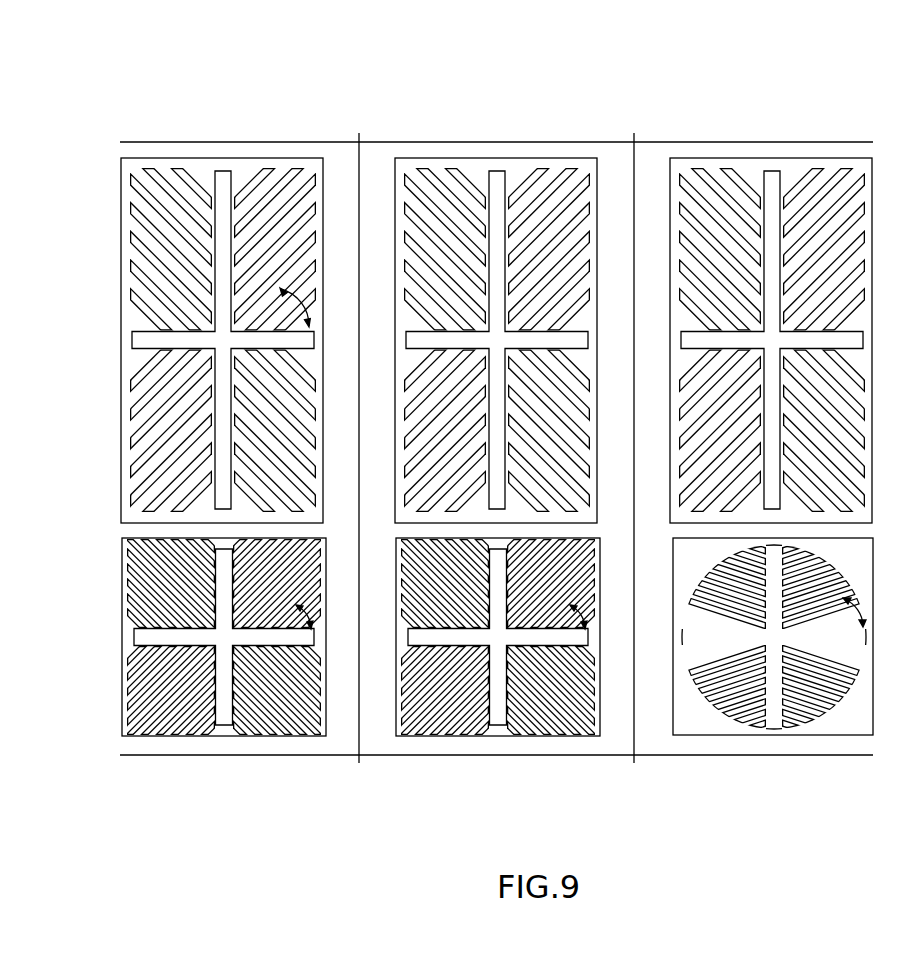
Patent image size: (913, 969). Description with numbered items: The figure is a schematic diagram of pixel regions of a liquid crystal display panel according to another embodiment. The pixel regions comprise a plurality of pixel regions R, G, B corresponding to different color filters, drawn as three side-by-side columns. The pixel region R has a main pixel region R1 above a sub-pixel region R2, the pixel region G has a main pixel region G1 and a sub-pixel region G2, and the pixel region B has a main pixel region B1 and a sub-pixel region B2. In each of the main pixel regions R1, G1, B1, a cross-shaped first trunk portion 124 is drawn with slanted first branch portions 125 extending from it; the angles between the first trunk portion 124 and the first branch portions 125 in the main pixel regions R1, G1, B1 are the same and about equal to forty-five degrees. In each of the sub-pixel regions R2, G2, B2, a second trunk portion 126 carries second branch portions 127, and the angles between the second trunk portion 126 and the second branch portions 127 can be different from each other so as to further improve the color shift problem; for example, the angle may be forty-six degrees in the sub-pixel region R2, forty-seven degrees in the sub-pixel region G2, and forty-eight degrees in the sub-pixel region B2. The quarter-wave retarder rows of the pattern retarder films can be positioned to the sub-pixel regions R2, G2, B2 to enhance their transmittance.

The first trunk portion 124 is at (234, 171).
The first branch portions 125 is at (145, 262).
The second trunk portion 126 is at (135, 631).
The second branch portions 127 is at (130, 568).
The pixel region R is at (293, 127).
The pixel region G is at (564, 127).
The pixel region B is at (840, 127).
The main pixel region R1 is at (144, 157).
The sub-pixel region R2 is at (145, 740).
The main pixel region G1 is at (418, 157).
The sub-pixel region G2 is at (419, 740).
The main pixel region B1 is at (684, 157).
The sub-pixel region B2 is at (694, 740).